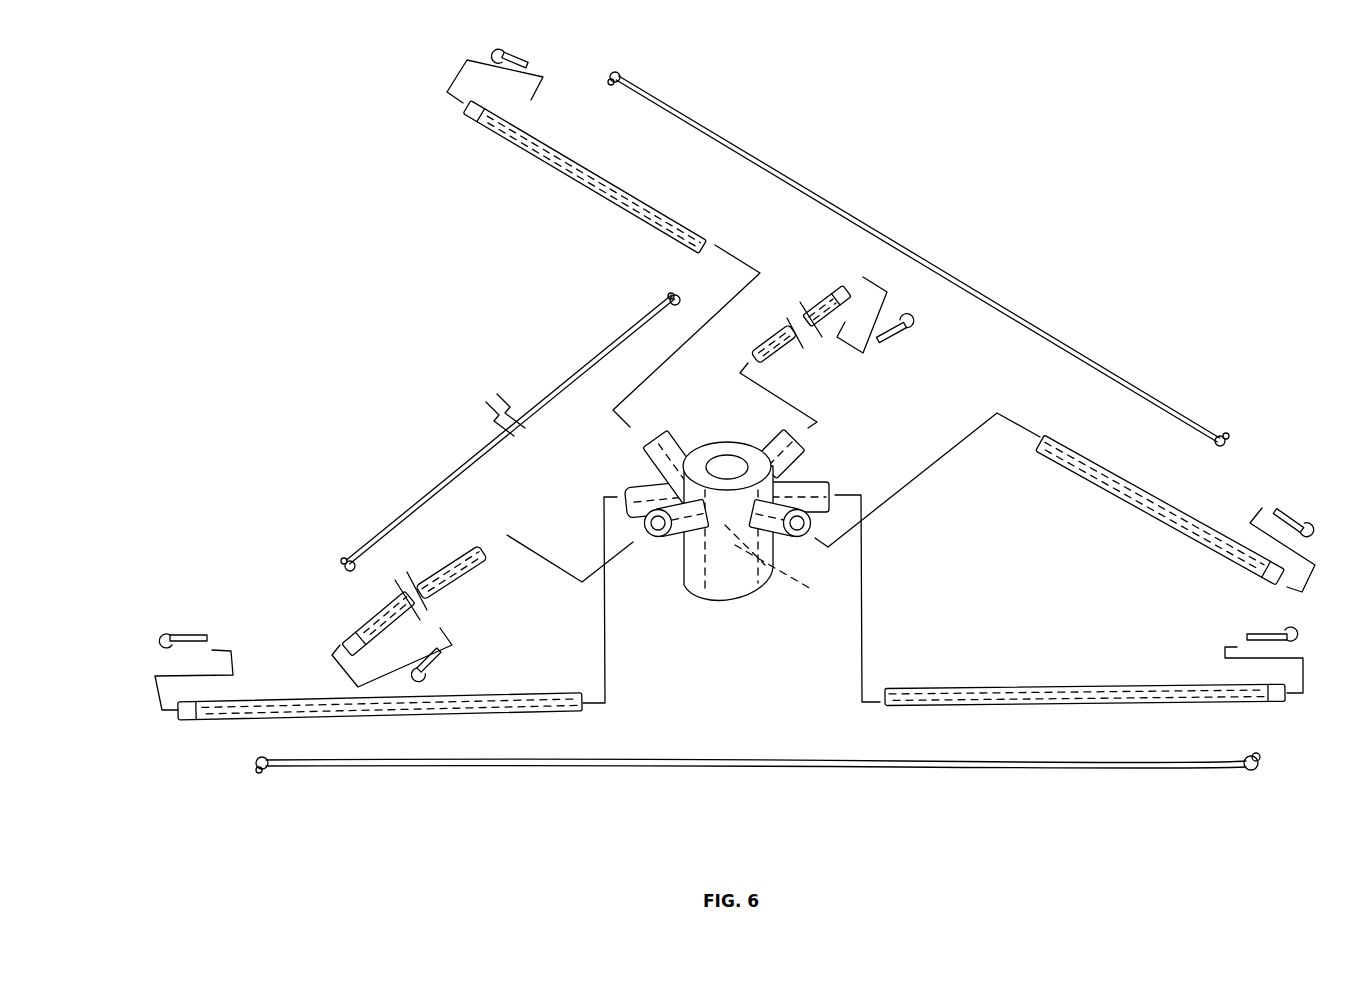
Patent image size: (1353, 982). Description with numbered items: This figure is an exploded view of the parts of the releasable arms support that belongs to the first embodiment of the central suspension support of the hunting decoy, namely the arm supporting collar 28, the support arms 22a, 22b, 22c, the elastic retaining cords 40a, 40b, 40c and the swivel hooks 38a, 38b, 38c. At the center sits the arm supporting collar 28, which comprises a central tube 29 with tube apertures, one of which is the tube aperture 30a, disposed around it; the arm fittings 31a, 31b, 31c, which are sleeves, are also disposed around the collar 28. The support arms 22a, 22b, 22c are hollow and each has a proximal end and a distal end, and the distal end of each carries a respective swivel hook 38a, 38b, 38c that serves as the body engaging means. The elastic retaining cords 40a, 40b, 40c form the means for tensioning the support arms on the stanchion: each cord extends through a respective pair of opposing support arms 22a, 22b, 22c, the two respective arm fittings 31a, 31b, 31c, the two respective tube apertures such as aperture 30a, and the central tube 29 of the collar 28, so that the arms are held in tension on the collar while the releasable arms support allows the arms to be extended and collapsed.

The support arm 22a is at (477, 695).
The support arm 22b is at (570, 170).
The support arm 22c is at (817, 302).
The arm supporting collar 28 is at (749, 554).
The central tube 29 is at (737, 580).
The tube aperture 30a is at (784, 574).
The arm fitting 31a is at (633, 492).
The arm fitting 31b is at (665, 440).
The arm fitting 31c is at (648, 612).
The swivel hook 38a is at (177, 633).
The swivel hook 38b is at (522, 58).
The swivel hook 38c is at (922, 330).
The elastic retaining cord 40a is at (1038, 765).
The elastic retaining cord 40b is at (1115, 375).
The elastic retaining cord 40c is at (428, 497).